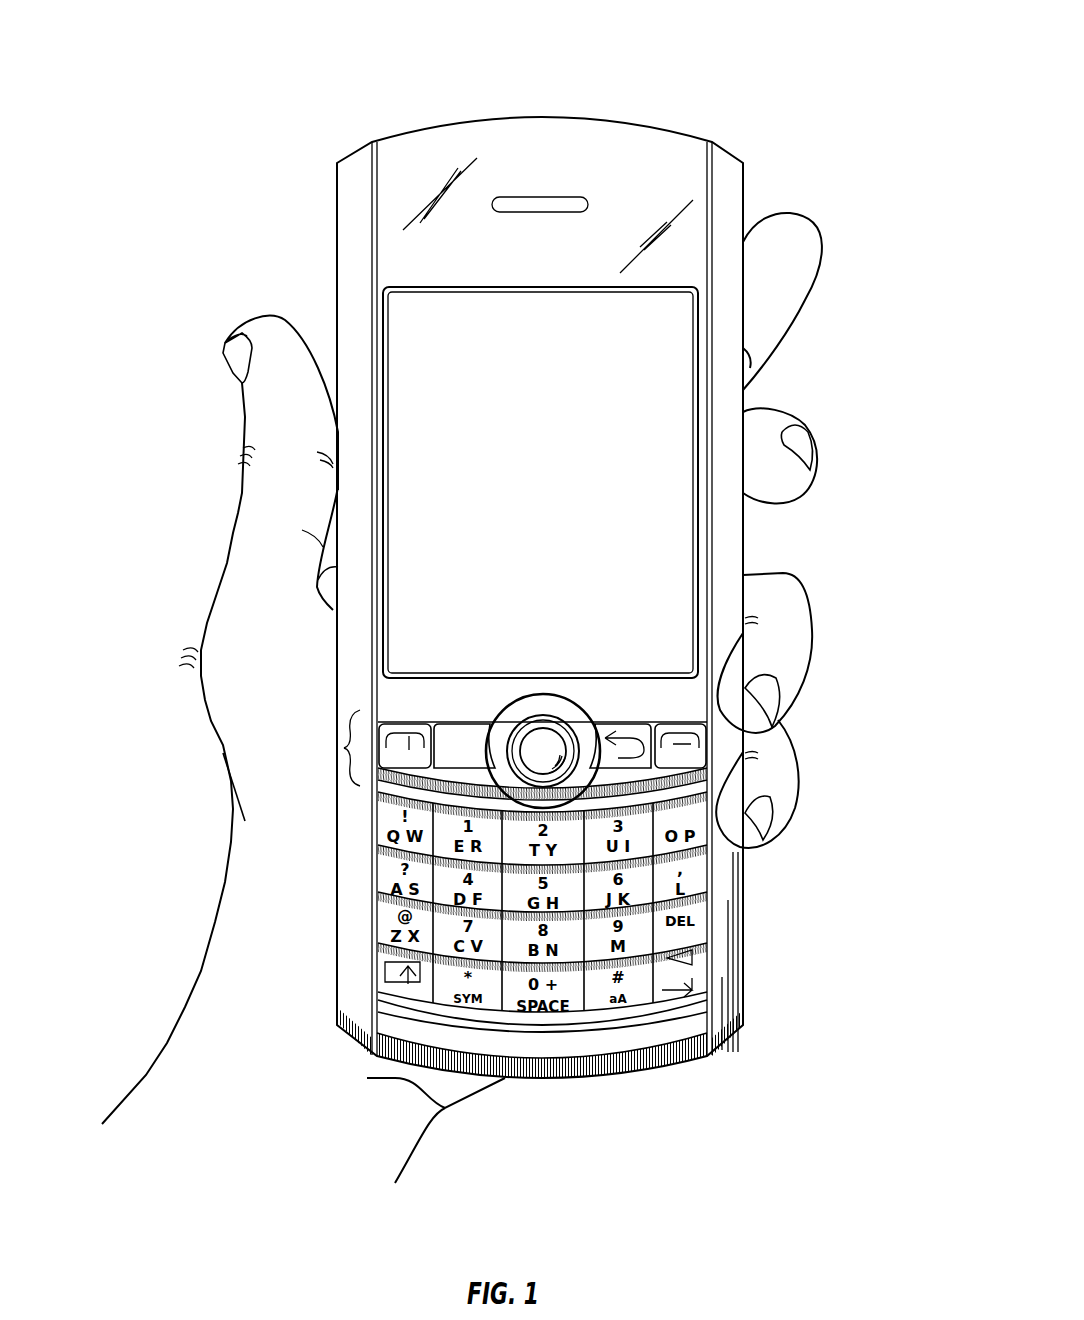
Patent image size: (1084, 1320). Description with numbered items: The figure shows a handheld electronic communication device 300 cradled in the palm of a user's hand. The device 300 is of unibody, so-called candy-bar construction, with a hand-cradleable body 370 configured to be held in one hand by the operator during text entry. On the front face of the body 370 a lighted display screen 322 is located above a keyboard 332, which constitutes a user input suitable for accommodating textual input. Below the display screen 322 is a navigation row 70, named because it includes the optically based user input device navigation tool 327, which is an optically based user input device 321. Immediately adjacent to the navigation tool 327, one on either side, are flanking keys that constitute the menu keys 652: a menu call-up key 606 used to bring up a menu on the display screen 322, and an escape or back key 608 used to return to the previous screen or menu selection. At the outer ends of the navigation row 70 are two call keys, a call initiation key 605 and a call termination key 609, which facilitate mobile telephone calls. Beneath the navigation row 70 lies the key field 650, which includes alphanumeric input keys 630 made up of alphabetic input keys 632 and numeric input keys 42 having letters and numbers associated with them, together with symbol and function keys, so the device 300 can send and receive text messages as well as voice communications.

The handheld electronic communication device 300 is at (693, 51).
The body 370 is at (729, 199).
The display screen 322 is at (412, 326).
The menu keys 652 is at (611, 716).
The menu call-up key 606 is at (453, 731).
The escape or back key 608 is at (630, 731).
The navigation row 70 is at (344, 748).
The call termination key 609 is at (699, 743).
The call initiation key 605 is at (398, 742).
The optically based user input device navigation tool 327 is at (585, 784).
The optically based user input device 321 is at (538, 758).
The alphanumeric input keys 630 is at (637, 928).
The alphabetic input keys 632 is at (371, 862).
The key field 650 is at (388, 996).
The keyboard 332 is at (556, 1045).
The numeric input keys 42 is at (562, 991).